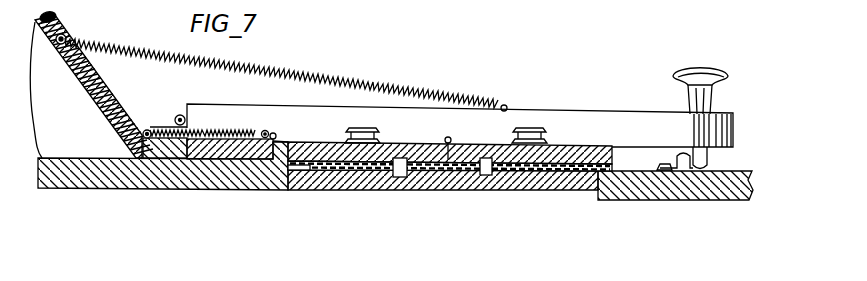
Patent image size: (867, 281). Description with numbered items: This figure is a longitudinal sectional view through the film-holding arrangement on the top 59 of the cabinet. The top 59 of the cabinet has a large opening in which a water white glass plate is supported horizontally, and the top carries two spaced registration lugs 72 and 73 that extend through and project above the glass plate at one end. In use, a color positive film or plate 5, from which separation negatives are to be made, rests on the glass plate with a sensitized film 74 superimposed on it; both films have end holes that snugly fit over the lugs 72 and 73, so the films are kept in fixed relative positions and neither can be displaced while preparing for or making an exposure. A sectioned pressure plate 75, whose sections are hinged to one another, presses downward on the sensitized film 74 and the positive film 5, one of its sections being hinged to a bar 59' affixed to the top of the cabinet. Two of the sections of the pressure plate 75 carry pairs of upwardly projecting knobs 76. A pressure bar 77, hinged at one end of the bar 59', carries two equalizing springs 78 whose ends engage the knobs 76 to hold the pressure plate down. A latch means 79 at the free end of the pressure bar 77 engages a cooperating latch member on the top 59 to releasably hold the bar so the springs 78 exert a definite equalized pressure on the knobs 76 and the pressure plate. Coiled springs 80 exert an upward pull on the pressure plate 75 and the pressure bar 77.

The color positive film or plate 5 is at (548, 173).
The top of the cabinet 59 is at (157, 122).
The bar 59' is at (160, 187).
The registration lug 72 is at (397, 170).
The registration lug 73 is at (482, 175).
The sensitized film 74 is at (328, 172).
The pressure plate 75 is at (278, 164).
The knob 76 is at (548, 140).
The pressure bar 77 is at (647, 125).
The equalizing spring 78 is at (535, 128).
The latch means 79 is at (712, 162).
The coiled spring 80 is at (352, 90).